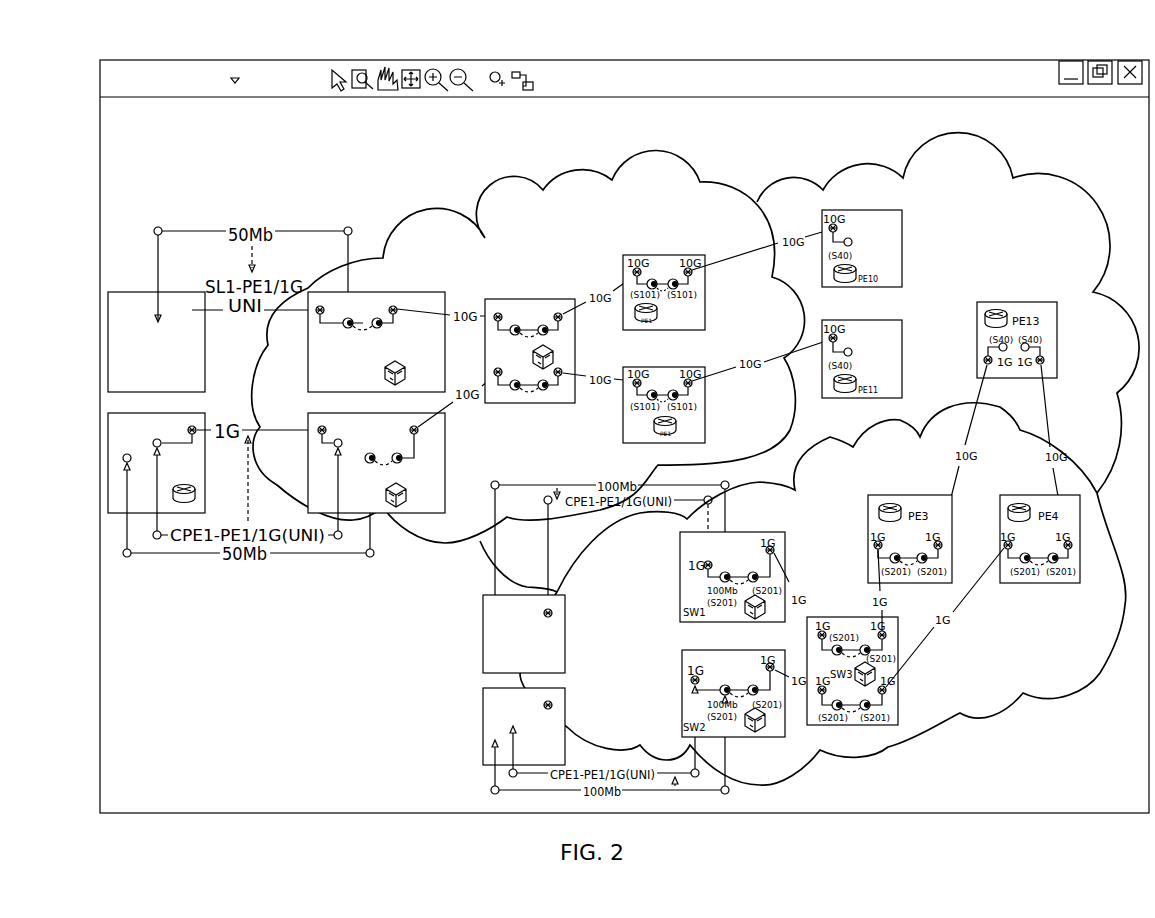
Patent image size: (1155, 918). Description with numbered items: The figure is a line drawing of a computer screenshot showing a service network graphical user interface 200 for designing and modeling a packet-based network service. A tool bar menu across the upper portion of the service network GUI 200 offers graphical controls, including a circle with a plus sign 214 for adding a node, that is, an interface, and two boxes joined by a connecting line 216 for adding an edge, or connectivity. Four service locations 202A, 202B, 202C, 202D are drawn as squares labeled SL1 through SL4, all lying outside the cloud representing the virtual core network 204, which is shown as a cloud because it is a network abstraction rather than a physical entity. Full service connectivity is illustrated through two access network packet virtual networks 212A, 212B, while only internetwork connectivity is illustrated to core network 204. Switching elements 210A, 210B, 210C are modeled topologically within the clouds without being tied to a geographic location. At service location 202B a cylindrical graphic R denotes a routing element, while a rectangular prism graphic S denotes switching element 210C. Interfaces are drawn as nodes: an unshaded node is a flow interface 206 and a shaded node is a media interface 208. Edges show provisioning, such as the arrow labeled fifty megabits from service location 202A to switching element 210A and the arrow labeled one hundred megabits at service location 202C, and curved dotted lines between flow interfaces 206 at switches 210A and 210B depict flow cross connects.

The service network graphical user interface 200 is at (186, 717).
The service location 202A is at (198, 356).
The service location 202B is at (203, 498).
The service location 202C is at (483, 653).
The service location 202D is at (483, 743).
The virtual core network 204 is at (1053, 185).
The flow interface 206 is at (160, 439).
The media interface 208 is at (193, 412).
The switching element 210A is at (420, 288).
The switching element 210B is at (548, 298).
The switching element 210C is at (404, 500).
The access network 212A is at (565, 170).
The access network 212B is at (1003, 720).
The add node icon 214 is at (489, 58).
The add edge icon 216 is at (536, 61).
The routing element graphical representation R is at (187, 503).
The switching element graphical representation S is at (410, 505).